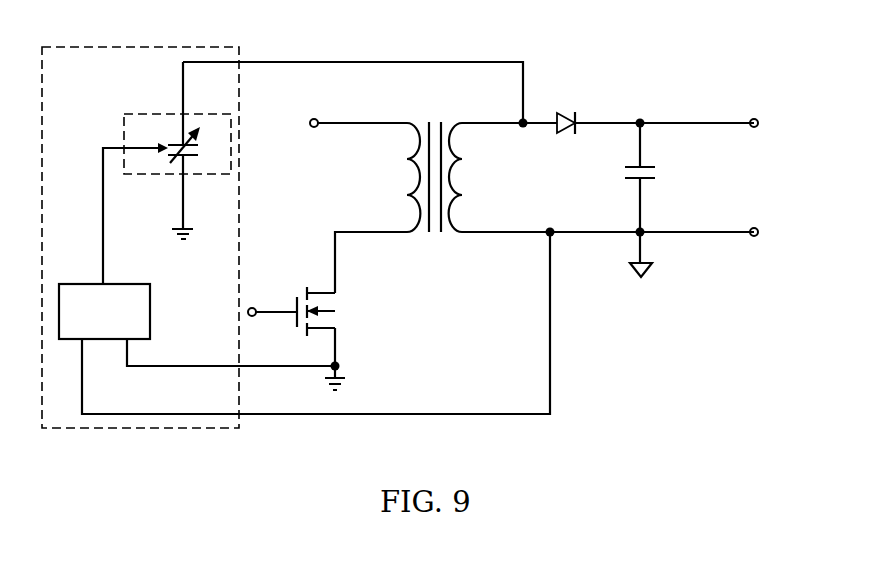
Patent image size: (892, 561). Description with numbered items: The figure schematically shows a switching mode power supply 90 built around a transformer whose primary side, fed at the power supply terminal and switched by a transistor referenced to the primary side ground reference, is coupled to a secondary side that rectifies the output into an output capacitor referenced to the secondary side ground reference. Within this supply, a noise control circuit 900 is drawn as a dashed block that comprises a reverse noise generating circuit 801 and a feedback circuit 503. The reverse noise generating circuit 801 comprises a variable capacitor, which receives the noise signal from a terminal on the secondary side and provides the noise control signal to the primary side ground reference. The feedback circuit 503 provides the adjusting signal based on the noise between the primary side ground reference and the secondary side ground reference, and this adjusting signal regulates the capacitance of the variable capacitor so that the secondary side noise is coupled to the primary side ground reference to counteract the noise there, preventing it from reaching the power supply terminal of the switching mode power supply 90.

The switching mode power supply 90 is at (735, 66).
The noise control circuit 900 is at (79, 78).
The reverse noise generating circuit 801 is at (148, 114).
The feedback circuit 503 is at (104, 311).